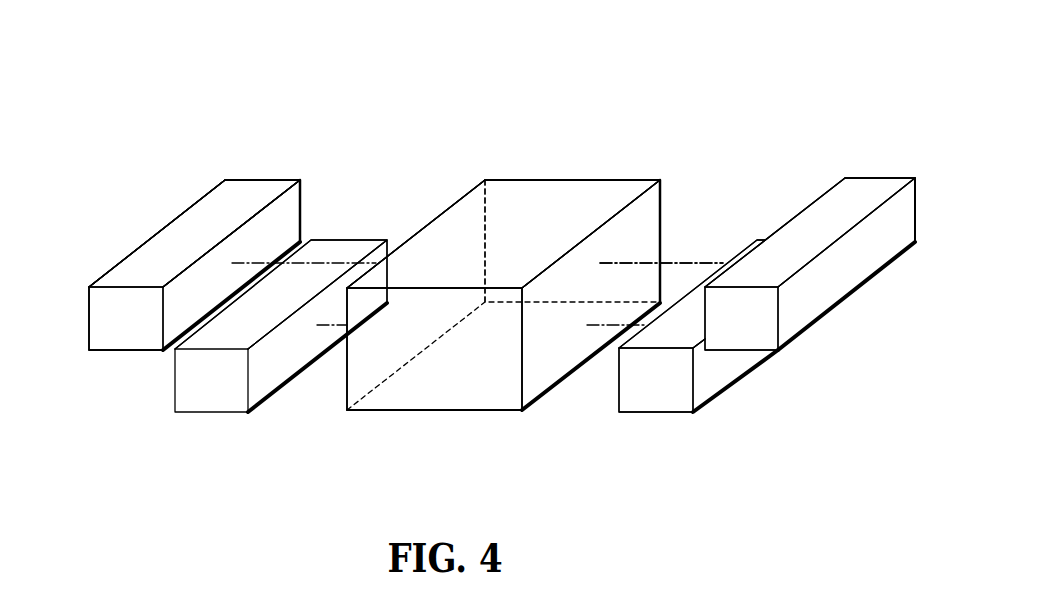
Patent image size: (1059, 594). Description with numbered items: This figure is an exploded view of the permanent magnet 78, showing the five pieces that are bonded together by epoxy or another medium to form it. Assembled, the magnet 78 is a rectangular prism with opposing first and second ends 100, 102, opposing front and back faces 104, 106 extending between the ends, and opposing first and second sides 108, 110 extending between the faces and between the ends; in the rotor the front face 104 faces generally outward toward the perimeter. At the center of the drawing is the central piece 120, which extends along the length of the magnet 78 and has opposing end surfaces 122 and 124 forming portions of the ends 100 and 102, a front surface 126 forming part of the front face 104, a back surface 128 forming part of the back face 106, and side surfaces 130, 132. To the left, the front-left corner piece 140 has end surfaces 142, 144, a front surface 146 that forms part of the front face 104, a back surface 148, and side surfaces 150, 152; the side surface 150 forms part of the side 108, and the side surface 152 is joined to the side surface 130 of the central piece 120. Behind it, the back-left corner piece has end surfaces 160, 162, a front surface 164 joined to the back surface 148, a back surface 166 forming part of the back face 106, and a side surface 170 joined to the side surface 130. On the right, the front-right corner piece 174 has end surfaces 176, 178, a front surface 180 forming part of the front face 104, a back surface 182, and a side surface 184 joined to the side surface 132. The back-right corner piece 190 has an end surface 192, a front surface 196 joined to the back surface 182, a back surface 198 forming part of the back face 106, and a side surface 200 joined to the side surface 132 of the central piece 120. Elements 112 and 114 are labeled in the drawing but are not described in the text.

The permanent magnet 78 is at (576, 100).
The first end 100 is at (430, 396).
The second end 102 is at (624, 178).
The front face 104 is at (495, 195).
The back face 106 is at (504, 411).
The first side 108 is at (123, 258).
The second side 110 is at (727, 358).
The top surface of first side block 112 is at (197, 200).
The front top corner of first side block 114 is at (86, 285).
The central piece 120 is at (402, 385).
The end surface 122 is at (470, 397).
The end surface 124 is at (577, 197).
The front surface 126 is at (540, 195).
The back surface 128 is at (397, 413).
The side surface 130 is at (443, 215).
The side surface 132 is at (637, 237).
The front-left corner piece 140 is at (170, 247).
The end surface 142 is at (123, 318).
The end surface 144 is at (274, 179).
The front surface 146 is at (232, 207).
The back surface 148 is at (127, 352).
The side surface 150 is at (88, 318).
The side surface 152 is at (287, 212).
The end surface 160 is at (207, 382).
The end surface 162 is at (362, 238).
The front surface 164 is at (304, 292).
The back surface 166 is at (268, 400).
The side surface 170 is at (290, 362).
The front-right corner piece 174 is at (870, 185).
The end surface 176 is at (741, 318).
The end surface 178 is at (846, 177).
The front surface 180 is at (800, 235).
The back surface 182 is at (824, 314).
The side surface 184 is at (806, 205).
The back-right corner piece 190 is at (672, 402).
The end surface 192 is at (656, 380).
The front surface 196 is at (650, 340).
The back surface 198 is at (718, 396).
The side surface 200 is at (682, 301).